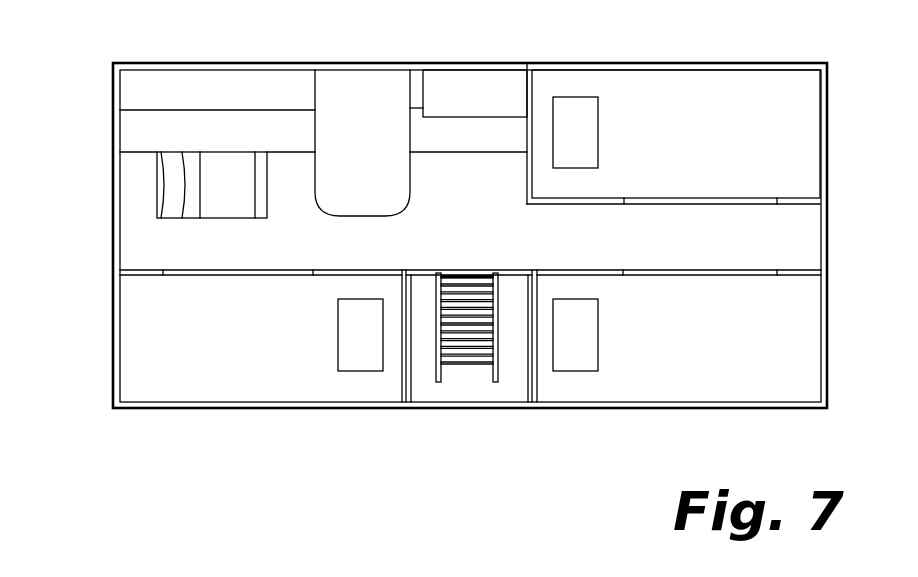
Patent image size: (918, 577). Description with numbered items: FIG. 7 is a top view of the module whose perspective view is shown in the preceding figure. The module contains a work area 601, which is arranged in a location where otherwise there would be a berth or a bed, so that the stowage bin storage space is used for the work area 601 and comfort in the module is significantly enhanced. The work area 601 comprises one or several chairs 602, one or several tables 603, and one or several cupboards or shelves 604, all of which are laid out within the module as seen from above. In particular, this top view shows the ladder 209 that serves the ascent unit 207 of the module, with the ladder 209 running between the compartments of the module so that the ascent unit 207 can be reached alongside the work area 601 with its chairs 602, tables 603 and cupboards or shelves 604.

The work area 601 is at (214, 89).
The chair 602 is at (172, 192).
The table 603 is at (382, 83).
The cupboard or shelf 604 is at (485, 85).
The ascent unit 207 is at (500, 398).
The ladder 209 is at (460, 364).